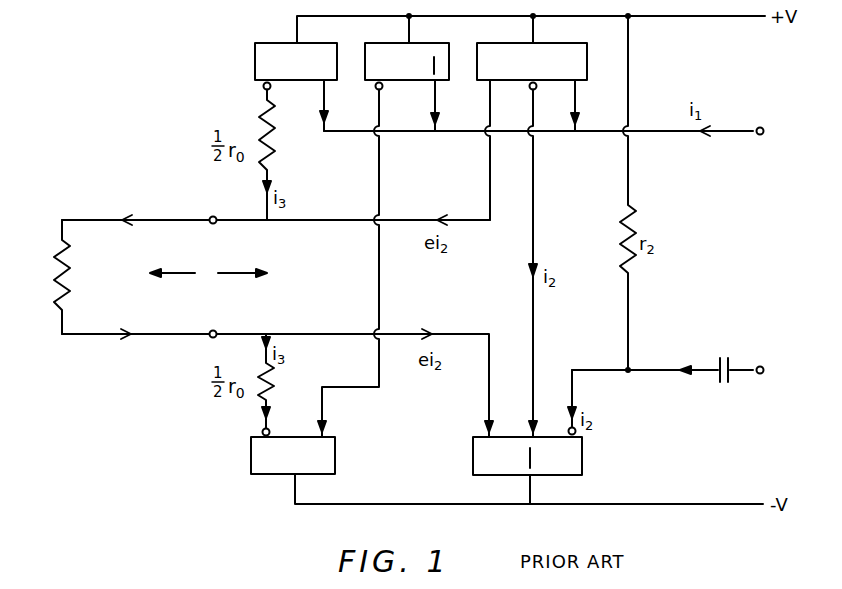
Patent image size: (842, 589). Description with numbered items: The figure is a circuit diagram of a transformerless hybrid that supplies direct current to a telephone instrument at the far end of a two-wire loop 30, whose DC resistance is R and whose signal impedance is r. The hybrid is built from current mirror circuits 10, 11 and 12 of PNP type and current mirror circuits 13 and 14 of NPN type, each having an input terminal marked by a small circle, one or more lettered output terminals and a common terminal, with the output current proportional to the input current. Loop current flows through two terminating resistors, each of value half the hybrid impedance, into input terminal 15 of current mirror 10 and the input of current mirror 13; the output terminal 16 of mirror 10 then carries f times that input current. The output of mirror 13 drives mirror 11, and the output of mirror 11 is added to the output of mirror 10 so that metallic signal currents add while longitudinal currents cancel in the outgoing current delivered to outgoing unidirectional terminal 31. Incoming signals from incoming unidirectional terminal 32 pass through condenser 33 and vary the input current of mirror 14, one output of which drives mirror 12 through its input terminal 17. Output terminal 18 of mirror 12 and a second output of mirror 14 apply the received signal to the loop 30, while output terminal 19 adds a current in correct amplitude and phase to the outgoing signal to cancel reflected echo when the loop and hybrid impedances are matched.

The current mirror circuit 10 is at (258, 57).
The current mirror circuit 11 is at (418, 57).
The current mirror circuit 12 is at (548, 53).
The current mirror circuit 13 is at (262, 452).
The current mirror circuit 14 is at (574, 462).
The input terminal 15 is at (262, 88).
The output terminal 16 is at (322, 103).
The input terminal 17 is at (530, 88).
The output terminal 18 is at (490, 170).
The output terminal 19 is at (578, 92).
The two-wire loop 30 is at (107, 292).
The outgoing unidirectional terminal 31 is at (774, 131).
The incoming unidirectional terminal 32 is at (761, 370).
The condenser 33 is at (728, 388).